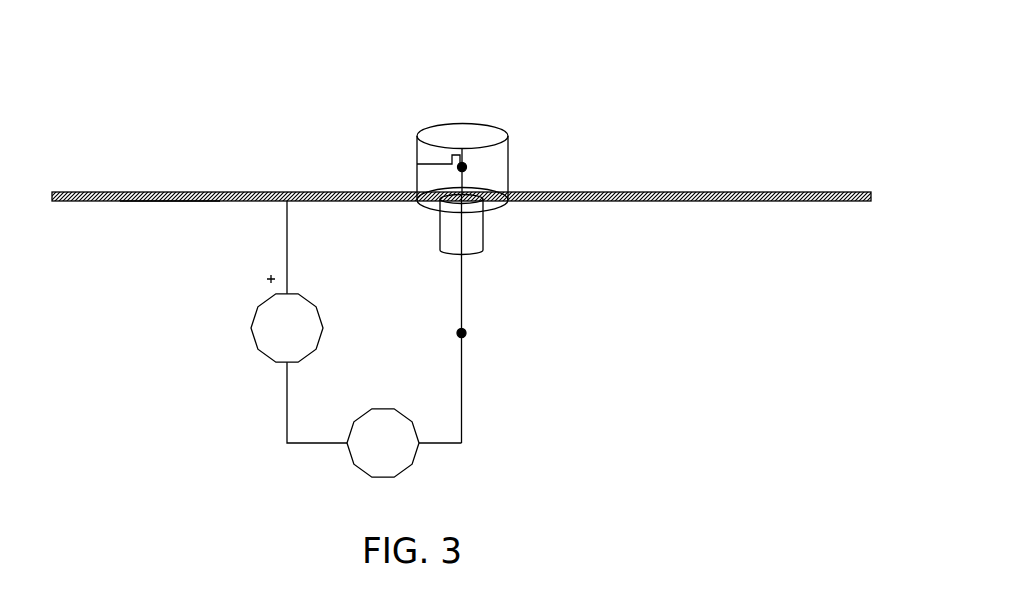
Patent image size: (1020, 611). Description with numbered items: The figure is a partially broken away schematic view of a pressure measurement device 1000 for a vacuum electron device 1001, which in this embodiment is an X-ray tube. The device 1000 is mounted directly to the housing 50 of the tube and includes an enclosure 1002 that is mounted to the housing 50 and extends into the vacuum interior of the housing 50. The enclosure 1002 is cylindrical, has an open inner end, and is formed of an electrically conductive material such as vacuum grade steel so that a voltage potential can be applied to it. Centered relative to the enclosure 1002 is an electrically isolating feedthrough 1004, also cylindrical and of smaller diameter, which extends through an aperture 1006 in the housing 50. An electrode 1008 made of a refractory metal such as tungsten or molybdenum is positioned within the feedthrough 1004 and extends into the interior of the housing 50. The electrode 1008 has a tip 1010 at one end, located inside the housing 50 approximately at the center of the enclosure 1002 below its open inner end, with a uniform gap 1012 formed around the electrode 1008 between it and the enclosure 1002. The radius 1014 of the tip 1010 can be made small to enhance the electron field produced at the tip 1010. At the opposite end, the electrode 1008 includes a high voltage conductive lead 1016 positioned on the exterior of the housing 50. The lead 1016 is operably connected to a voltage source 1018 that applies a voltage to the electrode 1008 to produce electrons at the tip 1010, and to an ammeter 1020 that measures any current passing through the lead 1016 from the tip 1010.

The housing 50 is at (245, 190).
The pressure measurement device 1000 is at (402, 70).
The vacuum electron device 1001 is at (166, 207).
The enclosure 1002 is at (432, 152).
The electrically isolating feedthrough 1004 is at (437, 238).
The aperture 1006 is at (430, 208).
The electrode 1008 is at (500, 253).
The tip 1010 is at (455, 173).
The gap 1012 is at (437, 163).
The radius 1014 is at (462, 149).
The high voltage conductive lead 1016 is at (463, 299).
The voltage source 1018 is at (250, 328).
The ammeter 1020 is at (383, 405).